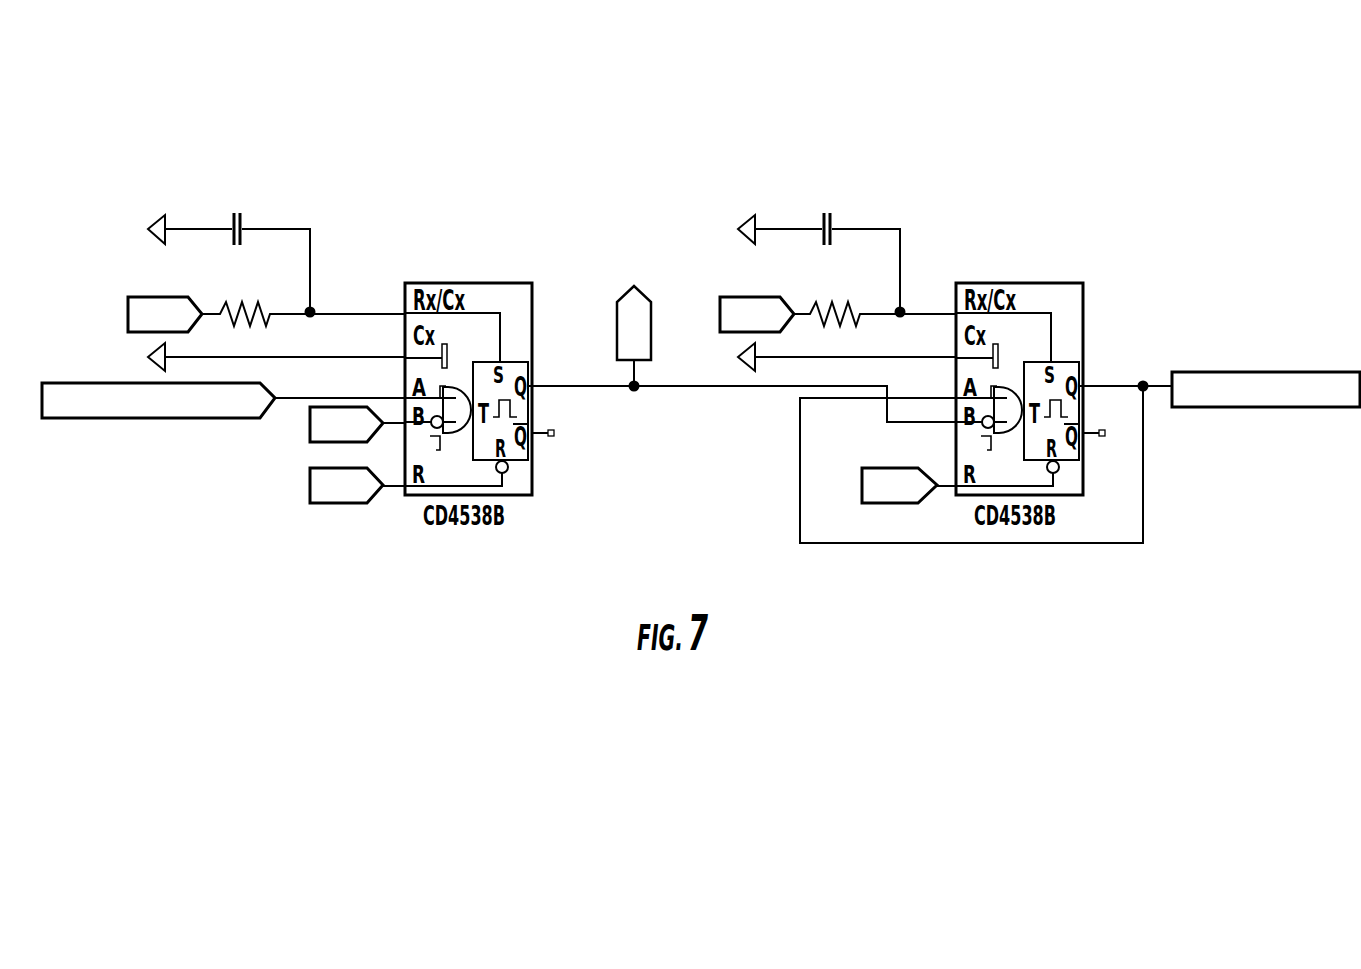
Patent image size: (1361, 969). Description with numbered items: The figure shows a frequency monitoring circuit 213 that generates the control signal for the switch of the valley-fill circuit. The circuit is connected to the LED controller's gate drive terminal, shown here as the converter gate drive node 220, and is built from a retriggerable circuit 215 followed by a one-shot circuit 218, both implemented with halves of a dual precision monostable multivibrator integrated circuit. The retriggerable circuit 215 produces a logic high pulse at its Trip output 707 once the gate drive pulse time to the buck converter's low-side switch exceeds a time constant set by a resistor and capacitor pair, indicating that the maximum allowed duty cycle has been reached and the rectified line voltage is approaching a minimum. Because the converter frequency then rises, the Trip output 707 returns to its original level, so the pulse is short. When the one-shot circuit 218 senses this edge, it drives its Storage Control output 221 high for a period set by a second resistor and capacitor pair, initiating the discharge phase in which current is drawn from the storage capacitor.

The frequency monitoring circuit 213 is at (724, 80).
The retriggerable circuit 215 is at (438, 190).
The one-shot circuit 218 is at (984, 190).
The output (Trip) 707 is at (640, 290).
The node (converter gate drive) 220 is at (172, 420).
The output (Storage Control) 221 is at (1190, 370).